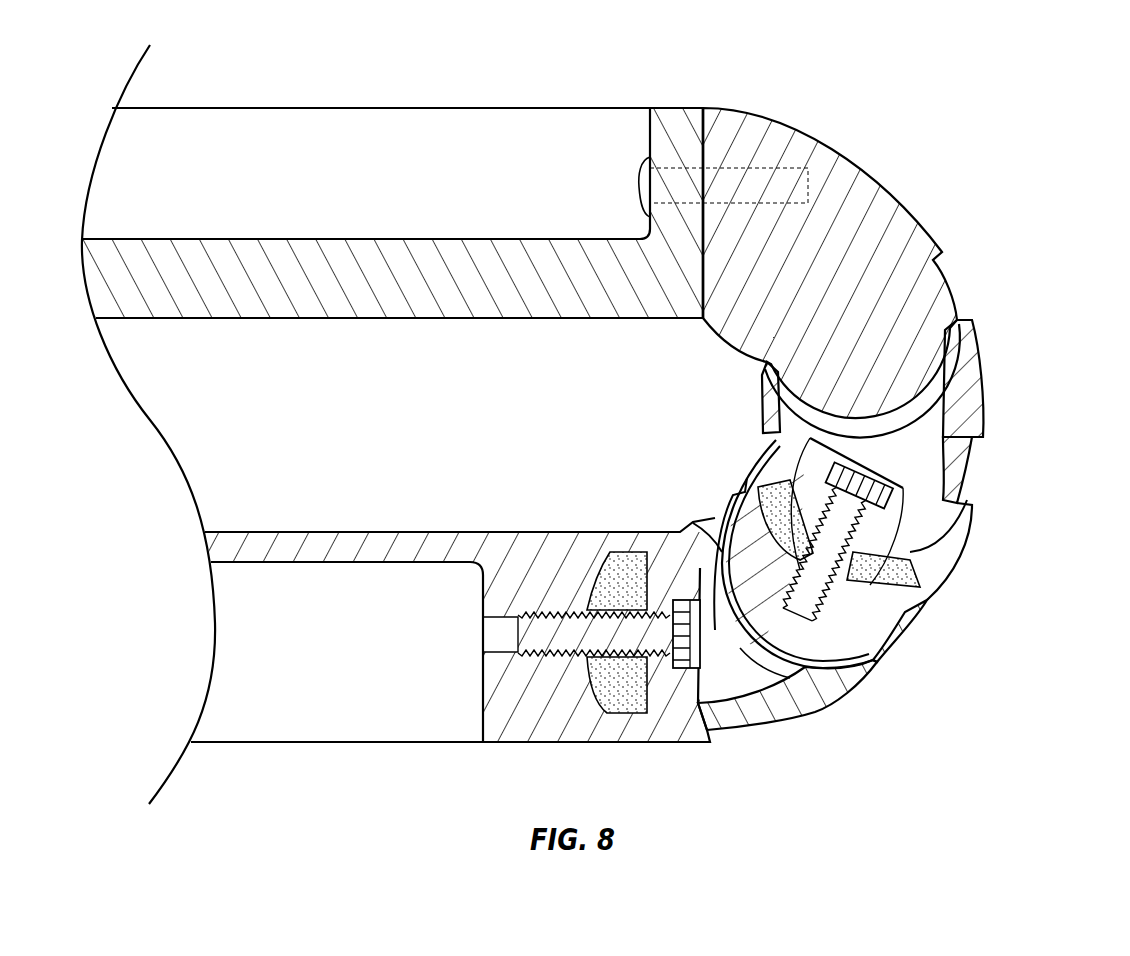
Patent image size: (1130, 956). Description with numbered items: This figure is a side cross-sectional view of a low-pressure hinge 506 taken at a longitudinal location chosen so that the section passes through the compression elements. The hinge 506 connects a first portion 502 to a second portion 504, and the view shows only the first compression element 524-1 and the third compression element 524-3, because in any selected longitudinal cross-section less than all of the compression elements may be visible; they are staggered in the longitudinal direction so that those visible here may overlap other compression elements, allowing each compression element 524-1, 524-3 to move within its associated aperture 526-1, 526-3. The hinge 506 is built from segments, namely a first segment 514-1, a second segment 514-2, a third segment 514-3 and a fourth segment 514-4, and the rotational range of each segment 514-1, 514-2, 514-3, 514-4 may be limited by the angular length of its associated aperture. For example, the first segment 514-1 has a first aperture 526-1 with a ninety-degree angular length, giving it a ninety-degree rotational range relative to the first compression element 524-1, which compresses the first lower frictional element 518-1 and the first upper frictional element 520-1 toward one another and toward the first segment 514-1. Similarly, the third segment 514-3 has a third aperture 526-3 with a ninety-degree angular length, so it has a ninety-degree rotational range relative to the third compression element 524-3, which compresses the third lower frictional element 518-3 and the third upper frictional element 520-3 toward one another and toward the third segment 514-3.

The first portion 502 is at (677, 140).
The second portion 504 is at (348, 708).
The hinge 506 is at (970, 104).
The first segment 514-1 is at (780, 705).
The second segment 514-2 is at (888, 612).
The third segment 514-3 is at (957, 463).
The fourth segment 514-4 is at (948, 312).
The first lower frictional element 518-1 is at (617, 700).
The third lower frictional element 518-3 is at (893, 607).
The first upper frictional element 520-1 is at (678, 678).
The third upper frictional element 520-3 is at (943, 513).
The first compression element 524-1 is at (540, 640).
The third compression element 524-3 is at (903, 568).
The first aperture 526-1 is at (642, 672).
The third aperture 526-3 is at (747, 478).